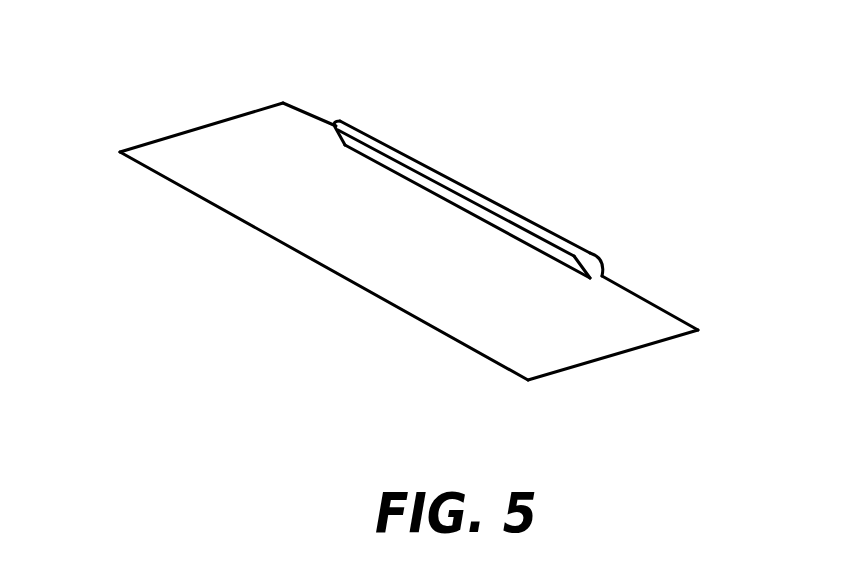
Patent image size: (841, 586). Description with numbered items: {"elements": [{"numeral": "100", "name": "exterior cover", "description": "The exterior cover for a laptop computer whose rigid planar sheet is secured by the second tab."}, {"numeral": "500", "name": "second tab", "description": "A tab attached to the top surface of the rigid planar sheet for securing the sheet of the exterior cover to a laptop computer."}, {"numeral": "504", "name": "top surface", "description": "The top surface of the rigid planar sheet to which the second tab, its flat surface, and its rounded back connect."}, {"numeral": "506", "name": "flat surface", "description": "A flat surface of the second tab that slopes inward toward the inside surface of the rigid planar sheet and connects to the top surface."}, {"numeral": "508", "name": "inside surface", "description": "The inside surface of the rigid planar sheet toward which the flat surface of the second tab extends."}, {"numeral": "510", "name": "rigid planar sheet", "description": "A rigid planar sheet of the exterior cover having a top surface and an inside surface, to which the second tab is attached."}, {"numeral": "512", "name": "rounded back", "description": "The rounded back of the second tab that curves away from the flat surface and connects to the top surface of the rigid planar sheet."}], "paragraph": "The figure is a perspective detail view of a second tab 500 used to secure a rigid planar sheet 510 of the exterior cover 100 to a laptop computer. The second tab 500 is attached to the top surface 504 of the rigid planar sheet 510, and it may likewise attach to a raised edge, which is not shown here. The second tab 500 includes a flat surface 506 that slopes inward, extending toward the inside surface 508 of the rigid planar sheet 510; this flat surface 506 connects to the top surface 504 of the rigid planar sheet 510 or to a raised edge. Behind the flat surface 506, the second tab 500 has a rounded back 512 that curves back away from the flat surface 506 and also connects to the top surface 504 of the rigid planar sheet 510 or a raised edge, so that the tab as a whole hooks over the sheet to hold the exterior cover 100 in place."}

The test strip / device 100 is at (707, 330).
The elongated member / cap 500 is at (455, 175).
The edge of base 504 is at (573, 355).
The ridge line of elongated member 506 is at (448, 193).
The base / substrate surface 508 is at (473, 326).
The edge of base 510 is at (212, 123).
The upper surface of elongated member 512 is at (542, 223).